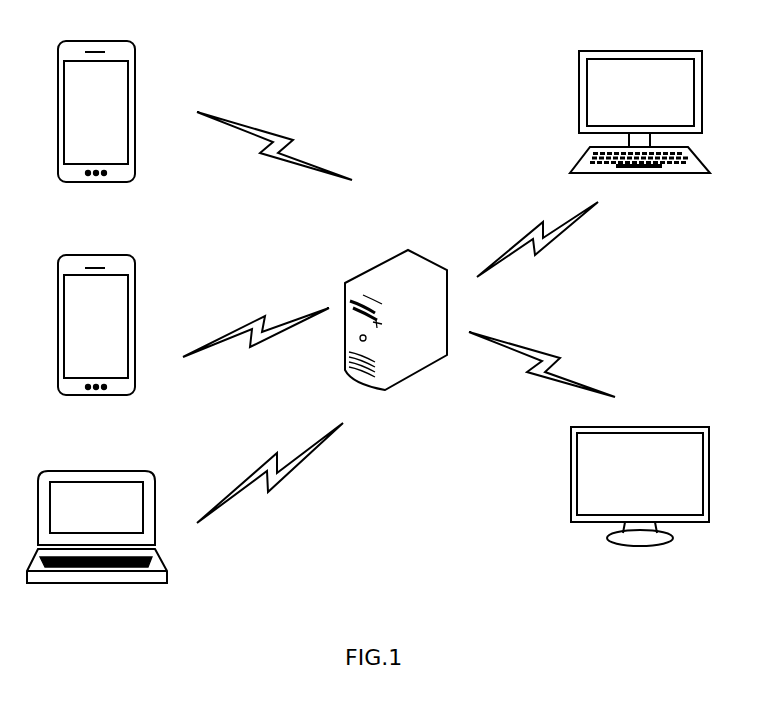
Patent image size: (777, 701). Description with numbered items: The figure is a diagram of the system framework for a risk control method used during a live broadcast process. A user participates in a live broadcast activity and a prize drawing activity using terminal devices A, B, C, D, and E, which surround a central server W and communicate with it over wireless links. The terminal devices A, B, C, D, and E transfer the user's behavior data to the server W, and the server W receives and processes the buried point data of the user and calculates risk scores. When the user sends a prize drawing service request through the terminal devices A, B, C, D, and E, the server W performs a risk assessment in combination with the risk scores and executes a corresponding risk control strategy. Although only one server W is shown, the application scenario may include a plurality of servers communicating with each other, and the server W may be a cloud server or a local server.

The terminal device A is at (122, 101).
The terminal device B is at (123, 310).
The terminal device C is at (115, 470).
The server W is at (398, 250).
The terminal device D is at (582, 97).
The terminal device E is at (643, 427).